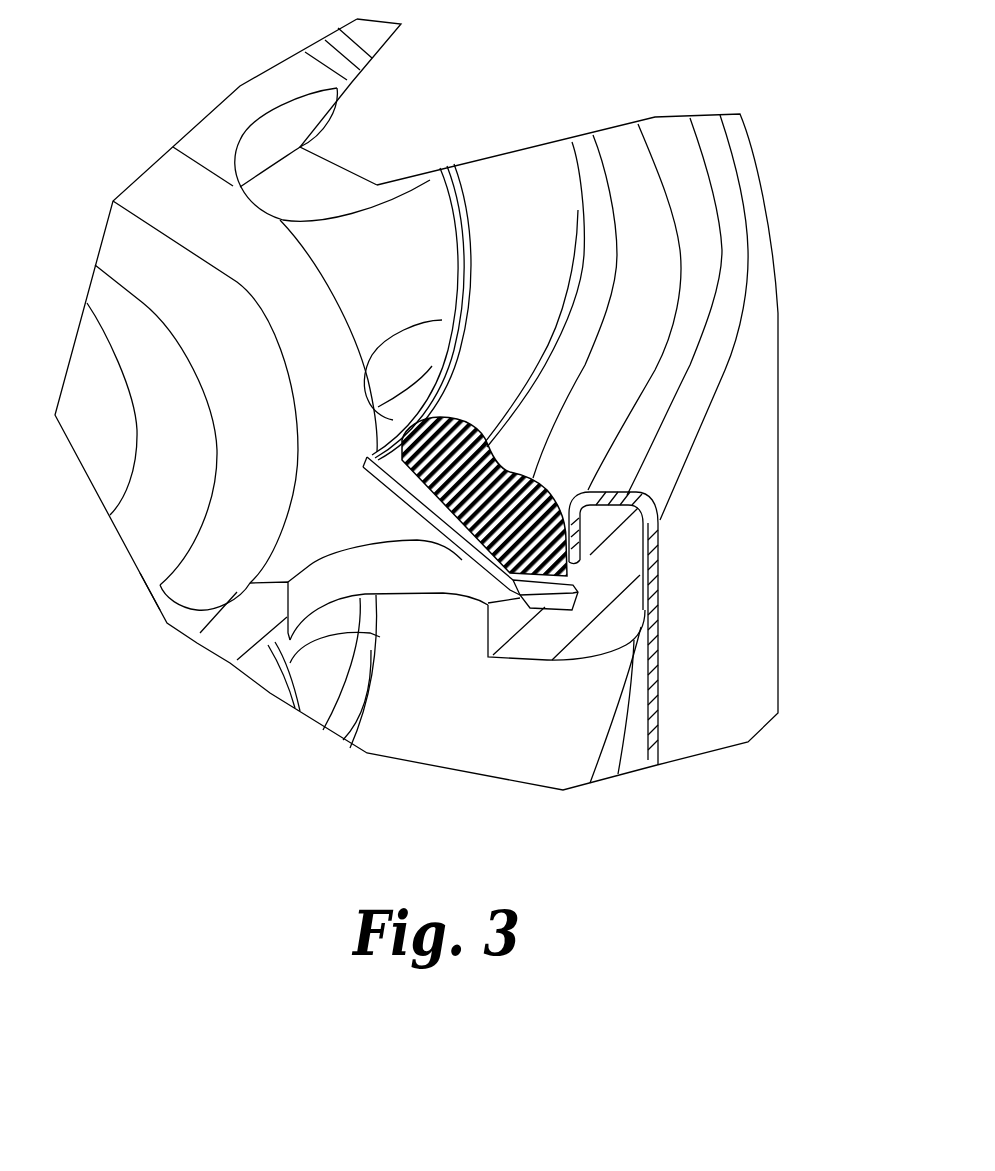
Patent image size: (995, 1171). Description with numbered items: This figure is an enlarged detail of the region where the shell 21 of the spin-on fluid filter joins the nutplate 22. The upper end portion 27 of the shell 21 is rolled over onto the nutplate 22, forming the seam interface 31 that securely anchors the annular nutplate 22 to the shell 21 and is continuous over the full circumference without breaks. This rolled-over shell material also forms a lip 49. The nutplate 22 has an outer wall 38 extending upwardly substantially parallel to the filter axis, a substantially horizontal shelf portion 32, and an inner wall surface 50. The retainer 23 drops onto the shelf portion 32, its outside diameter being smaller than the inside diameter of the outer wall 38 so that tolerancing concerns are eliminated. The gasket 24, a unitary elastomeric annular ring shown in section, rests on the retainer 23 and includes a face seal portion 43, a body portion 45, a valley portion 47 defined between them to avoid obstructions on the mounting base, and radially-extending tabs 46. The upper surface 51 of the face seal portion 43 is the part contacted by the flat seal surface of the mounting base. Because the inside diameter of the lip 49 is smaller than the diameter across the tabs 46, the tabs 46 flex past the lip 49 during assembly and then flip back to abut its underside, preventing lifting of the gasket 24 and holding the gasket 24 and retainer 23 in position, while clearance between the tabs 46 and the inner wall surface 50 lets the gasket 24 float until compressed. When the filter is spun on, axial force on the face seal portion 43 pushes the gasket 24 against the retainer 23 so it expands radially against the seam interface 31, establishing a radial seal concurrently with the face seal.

The shell 21 is at (760, 660).
The nutplate 22 is at (507, 645).
The retainer 23 is at (540, 608).
The gasket 24 is at (560, 377).
The upper end portion 27 is at (720, 418).
The seam interface 31 is at (657, 535).
The shelf portion 32 is at (488, 634).
The outer wall 38 is at (660, 595).
The face seal portion 43 is at (377, 448).
The body portion 45 is at (557, 462).
The radially-extending tabs 46 is at (587, 603).
The valley portion 47 is at (567, 410).
The lip 49 is at (607, 551).
The inner wall surface 50 is at (484, 496).
The upper surface 51 is at (470, 410).